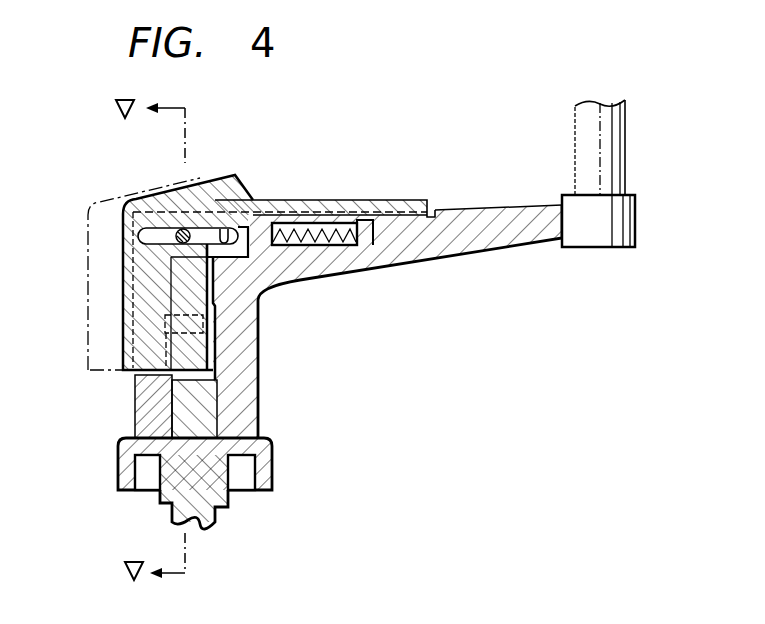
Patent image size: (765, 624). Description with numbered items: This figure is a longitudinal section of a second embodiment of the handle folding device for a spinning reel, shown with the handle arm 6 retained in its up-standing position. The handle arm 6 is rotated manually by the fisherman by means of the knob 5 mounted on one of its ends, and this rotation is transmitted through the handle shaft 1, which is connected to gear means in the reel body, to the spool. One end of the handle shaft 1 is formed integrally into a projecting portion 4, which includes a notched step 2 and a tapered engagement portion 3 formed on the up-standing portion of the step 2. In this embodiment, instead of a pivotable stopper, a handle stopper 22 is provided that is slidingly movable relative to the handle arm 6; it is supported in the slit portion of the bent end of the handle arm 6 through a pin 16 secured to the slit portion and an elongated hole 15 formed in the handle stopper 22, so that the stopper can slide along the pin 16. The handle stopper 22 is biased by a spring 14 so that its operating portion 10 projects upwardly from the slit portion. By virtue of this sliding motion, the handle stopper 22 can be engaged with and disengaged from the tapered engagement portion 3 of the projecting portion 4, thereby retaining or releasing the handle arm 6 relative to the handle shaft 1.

The handle shaft 1 is at (218, 522).
The notched step 2 is at (205, 378).
The tapered engagement portion 3 is at (210, 350).
The projecting portion 4 is at (200, 410).
The knob 5 is at (622, 172).
The handle arm 6 is at (452, 215).
The operating portion 10 is at (233, 175).
The spring 14 is at (349, 222).
The elongated hole 15 is at (228, 228).
The pin 16 is at (180, 229).
The handle stopper 22 is at (135, 304).